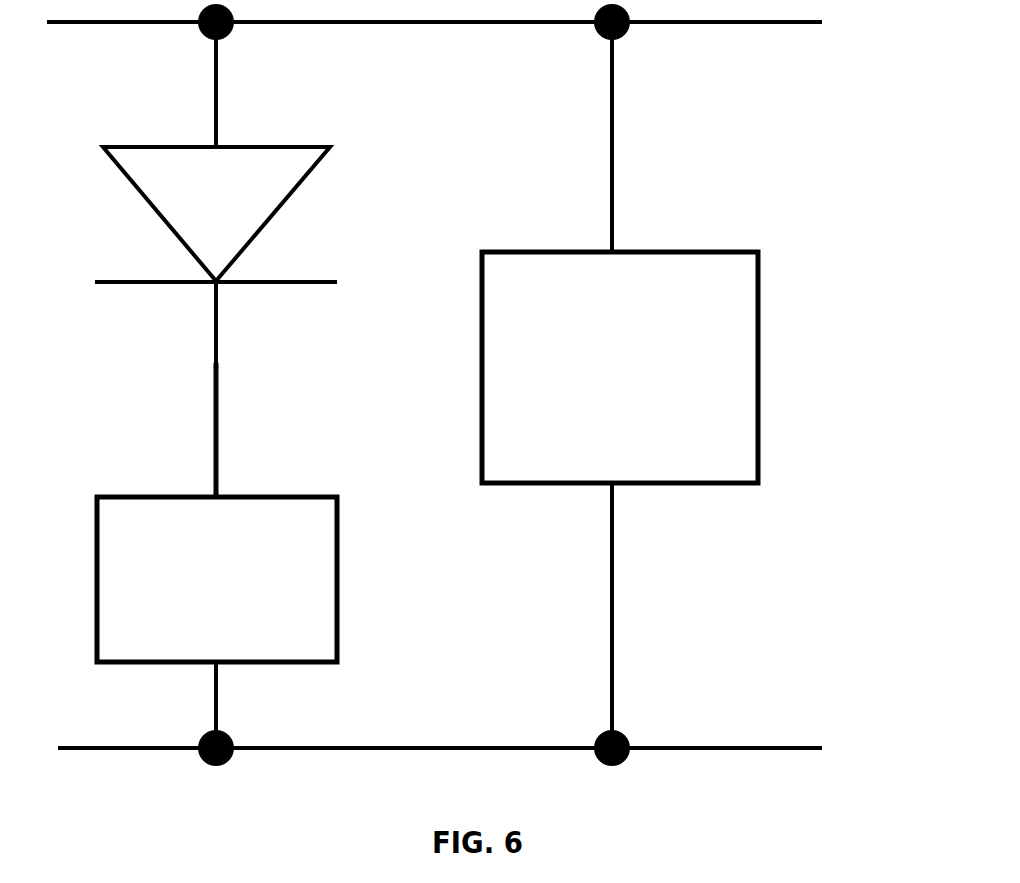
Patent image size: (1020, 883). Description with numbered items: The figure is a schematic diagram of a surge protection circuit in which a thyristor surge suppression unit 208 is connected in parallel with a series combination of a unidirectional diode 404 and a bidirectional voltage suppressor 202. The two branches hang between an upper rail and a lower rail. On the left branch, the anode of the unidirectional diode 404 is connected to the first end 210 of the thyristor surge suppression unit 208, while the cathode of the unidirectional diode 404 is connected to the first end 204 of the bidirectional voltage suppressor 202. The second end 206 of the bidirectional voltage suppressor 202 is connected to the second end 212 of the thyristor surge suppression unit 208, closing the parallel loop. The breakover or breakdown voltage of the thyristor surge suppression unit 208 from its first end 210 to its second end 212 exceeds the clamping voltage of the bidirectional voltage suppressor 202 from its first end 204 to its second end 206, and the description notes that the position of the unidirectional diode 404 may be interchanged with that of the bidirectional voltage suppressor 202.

The bidirectional voltage suppressor 202 is at (339, 587).
The first end of the bidirectional voltage suppressor 204 is at (214, 403).
The second end of the bidirectional voltage suppressor 206 is at (218, 688).
The thyristor surge suppression unit 208 is at (760, 343).
The first end of the thyristor surge suppression unit 210 is at (614, 113).
The second end of the thyristor surge suppression unit 212 is at (614, 528).
The unidirectional diode 404 is at (290, 190).